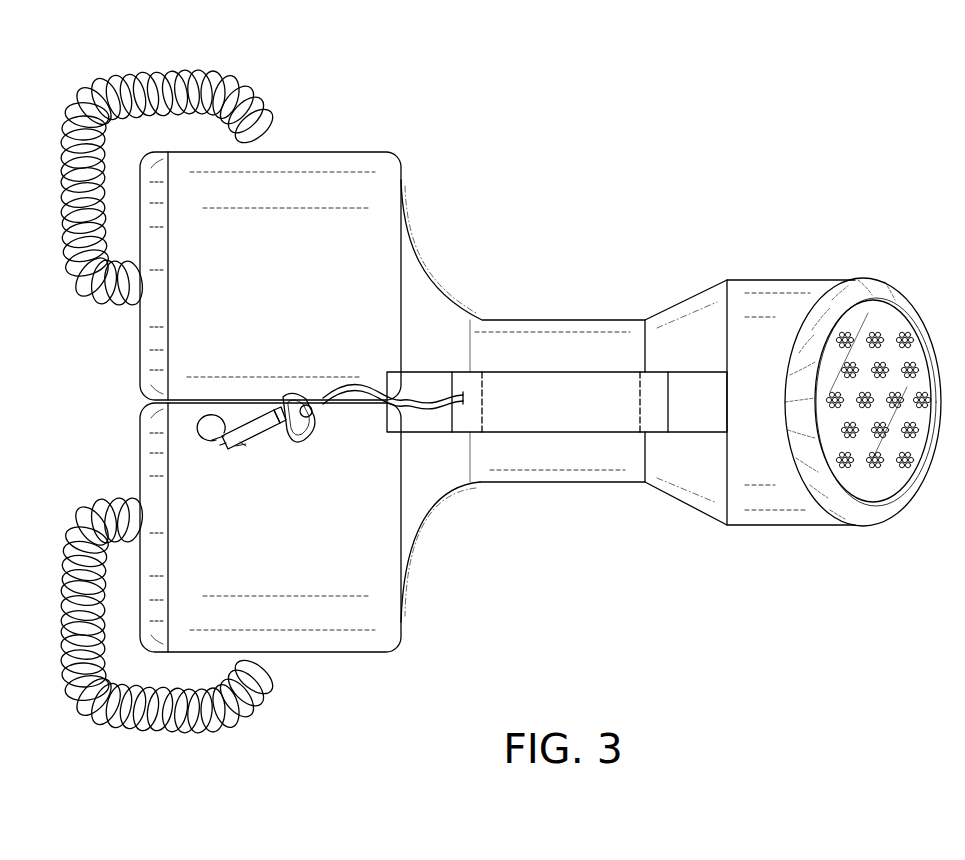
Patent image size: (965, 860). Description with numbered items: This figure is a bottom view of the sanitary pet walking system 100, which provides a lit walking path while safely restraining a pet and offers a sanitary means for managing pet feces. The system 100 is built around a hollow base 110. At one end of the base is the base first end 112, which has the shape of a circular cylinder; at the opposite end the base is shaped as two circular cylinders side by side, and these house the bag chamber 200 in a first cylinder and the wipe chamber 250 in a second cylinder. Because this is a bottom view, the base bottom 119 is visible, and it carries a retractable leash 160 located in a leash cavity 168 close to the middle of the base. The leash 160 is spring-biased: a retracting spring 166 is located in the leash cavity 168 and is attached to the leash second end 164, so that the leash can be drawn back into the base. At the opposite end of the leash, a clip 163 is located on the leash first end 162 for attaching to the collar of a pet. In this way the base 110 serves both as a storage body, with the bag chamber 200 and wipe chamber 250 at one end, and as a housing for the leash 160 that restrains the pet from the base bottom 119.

The sanitary pet walking system 100 is at (713, 130).
The hollow base 110 is at (678, 288).
The base first end 112 is at (773, 277).
The base bottom 119 is at (689, 400).
The retractable leash 160 is at (387, 393).
The leash first end 162 is at (330, 397).
The clip 163 is at (193, 432).
The leash second end 164 is at (460, 405).
The retracting spring 166 is at (567, 390).
The leash cavity 168 is at (652, 405).
The bag chamber 200 is at (333, 217).
The wipe chamber 250 is at (341, 608).